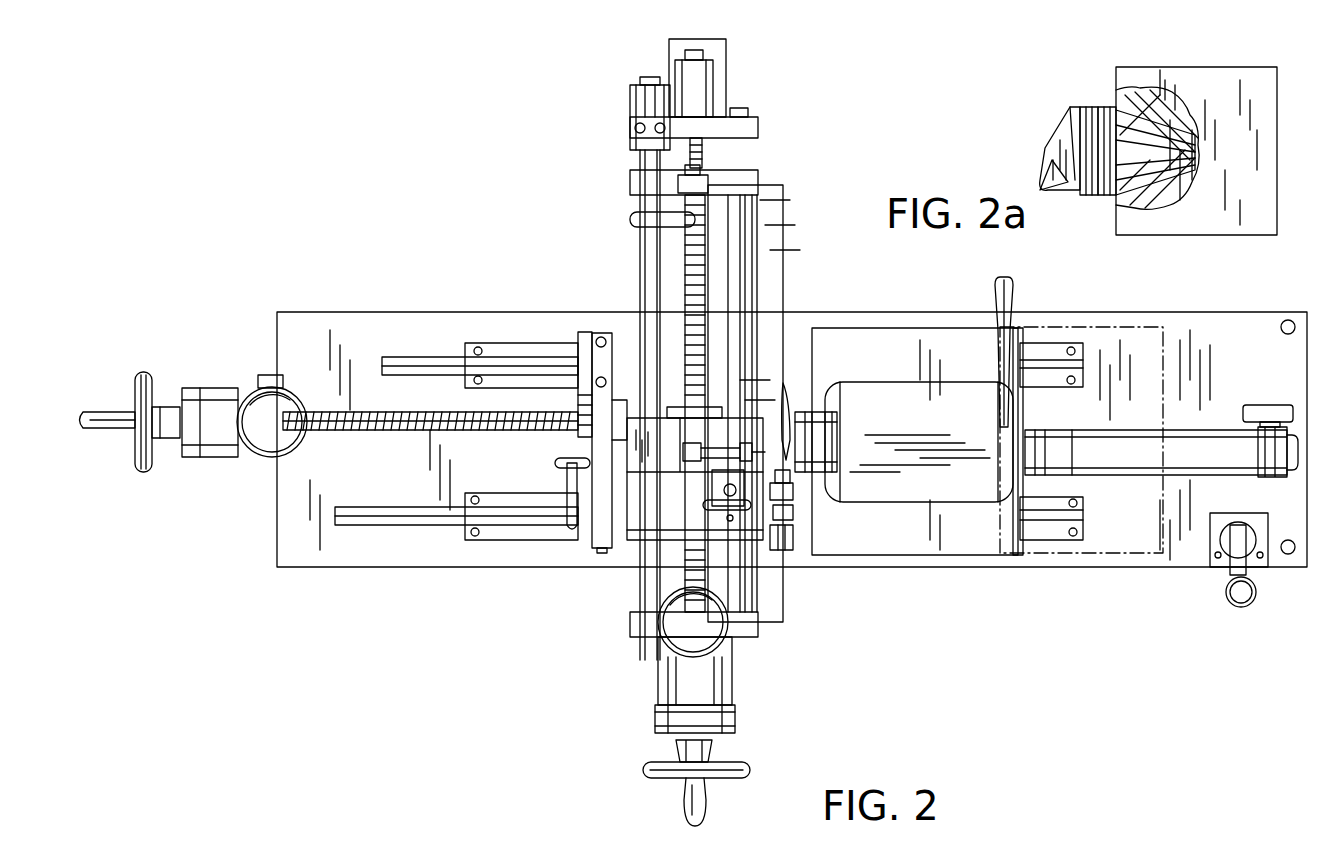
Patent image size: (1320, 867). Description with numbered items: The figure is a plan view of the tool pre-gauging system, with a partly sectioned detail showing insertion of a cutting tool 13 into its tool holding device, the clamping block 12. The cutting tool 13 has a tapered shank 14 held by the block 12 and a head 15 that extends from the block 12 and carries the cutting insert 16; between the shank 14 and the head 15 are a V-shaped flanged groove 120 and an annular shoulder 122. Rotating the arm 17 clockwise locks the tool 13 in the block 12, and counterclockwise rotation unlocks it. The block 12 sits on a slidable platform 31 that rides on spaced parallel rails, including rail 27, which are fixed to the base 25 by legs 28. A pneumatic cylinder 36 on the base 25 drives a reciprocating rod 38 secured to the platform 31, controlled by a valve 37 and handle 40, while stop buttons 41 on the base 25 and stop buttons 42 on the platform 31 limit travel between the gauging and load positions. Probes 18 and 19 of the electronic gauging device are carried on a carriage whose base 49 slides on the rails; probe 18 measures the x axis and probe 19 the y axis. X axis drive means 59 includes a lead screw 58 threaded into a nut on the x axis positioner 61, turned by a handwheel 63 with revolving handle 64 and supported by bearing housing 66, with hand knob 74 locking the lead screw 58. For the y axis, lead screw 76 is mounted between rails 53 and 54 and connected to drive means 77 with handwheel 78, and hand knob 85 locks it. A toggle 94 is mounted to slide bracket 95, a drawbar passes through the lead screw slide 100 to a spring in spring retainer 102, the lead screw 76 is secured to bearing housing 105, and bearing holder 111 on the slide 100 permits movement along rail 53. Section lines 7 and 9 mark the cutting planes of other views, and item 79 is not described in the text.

In FIG. 2, the section line 7 is at (97, 432).
In FIG. 2, the section line 9 is at (455, 265).
In FIG. 2, the clamping block 12 is at (919, 442).
In FIG. 2a, the clamping block 12 is at (1230, 78).
In FIG. 2, the cutting tool 13 is at (832, 440).
In FIG. 2a, the cutting tool 13 is at (1053, 110).
In FIG. 2a, the tapered shank 14 is at (1145, 170).
In FIG. 2a, the head 15 is at (1068, 135).
In FIG. 2, the cutting insert 16 is at (790, 462).
In FIG. 2a, the cutting insert 16 is at (1050, 180).
In FIG. 2, the arm 17 is at (1012, 300).
In FIG. 2, the probe 18 is at (788, 500).
In FIG. 2, the probe 19 is at (792, 532).
In FIG. 2, the base 25 is at (285, 552).
In FIG. 2, the rail 27 is at (435, 362).
In FIG. 2, the legs 28 is at (380, 522).
In FIG. 2, the slidable platform 31 is at (930, 548).
In FIG. 2, the pneumatic cylinder 36 is at (1200, 470).
In FIG. 2, the valve 37 is at (1260, 562).
In FIG. 2, the reciprocating rod 38 is at (1005, 510).
In FIG. 2, the handle 40 is at (1240, 605).
In FIG. 2, the stop buttons 41 is at (808, 422).
In FIG. 2, the stop buttons 42 is at (796, 412).
In FIG. 2, the base 49 is at (760, 625).
In FIG. 2, the rail 53 is at (640, 283).
In FIG. 2, the rail 54 is at (740, 230).
In FIG. 2, the lead screw 58 is at (332, 420).
In FIG. 2, the drive means 59 is at (157, 478).
In FIG. 2, the x axis positioner 61 is at (600, 550).
In FIG. 2, the handwheel 63 is at (143, 375).
In FIG. 2, the revolving handle 64 is at (120, 415).
In FIG. 2, the bearing housing 66 is at (222, 395).
In FIG. 2, the hand knob 74 is at (268, 440).
In FIG. 2, the lead screw 76 is at (685, 255).
In FIG. 2, the drive means 77 is at (745, 683).
In FIG. 2, the handwheel 78 is at (748, 770).
In FIG. 2, the lever 79 is at (572, 530).
In FIG. 2, the hand knob 85 is at (680, 642).
In FIG. 2, the toggle 94 is at (630, 220).
In FIG. 2, the slide bracket 95 is at (630, 183).
In FIG. 2, the lead screw slide 100 is at (758, 128).
In FIG. 2, the spring retainer 102 is at (690, 75).
In FIG. 2, the bearing housing 105 is at (726, 75).
In FIG. 2, the bearing holder 111 is at (640, 95).
In FIG. 2a, the V-shaped flanged groove 120 is at (1105, 105).
In FIG. 2a, the annular shoulder 122 is at (1090, 105).